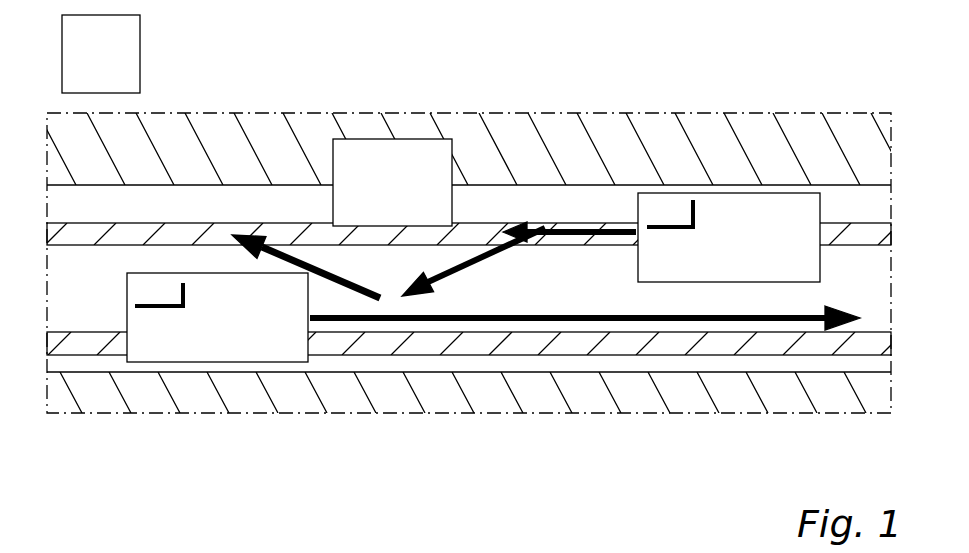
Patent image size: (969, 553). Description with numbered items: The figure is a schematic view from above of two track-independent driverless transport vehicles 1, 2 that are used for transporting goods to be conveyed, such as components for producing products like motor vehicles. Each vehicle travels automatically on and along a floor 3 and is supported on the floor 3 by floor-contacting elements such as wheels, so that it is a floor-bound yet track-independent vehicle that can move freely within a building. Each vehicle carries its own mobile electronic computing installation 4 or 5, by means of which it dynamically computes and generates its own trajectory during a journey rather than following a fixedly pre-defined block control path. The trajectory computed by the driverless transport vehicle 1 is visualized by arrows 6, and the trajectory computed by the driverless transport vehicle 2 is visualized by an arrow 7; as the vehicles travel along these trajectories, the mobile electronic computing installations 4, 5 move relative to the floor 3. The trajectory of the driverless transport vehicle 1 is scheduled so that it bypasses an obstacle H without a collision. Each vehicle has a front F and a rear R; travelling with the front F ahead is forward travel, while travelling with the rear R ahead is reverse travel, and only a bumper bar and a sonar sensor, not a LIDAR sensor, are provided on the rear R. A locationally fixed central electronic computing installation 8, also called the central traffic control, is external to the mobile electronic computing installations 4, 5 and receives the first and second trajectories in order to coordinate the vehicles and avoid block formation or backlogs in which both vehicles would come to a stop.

The driverless transport vehicle 1 is at (798, 203).
The driverless transport vehicle 2 is at (200, 363).
The floor 3 is at (102, 272).
The mobile electronic computing installation 4 is at (672, 207).
The mobile electronic computing installation 5 is at (157, 290).
The arrows 6 is at (284, 248).
The arrow 7 is at (467, 321).
The central electronic computing installation 8 is at (141, 58).
The obstacle H is at (393, 164).
The front F is at (317, 368).
The rear R is at (116, 365).